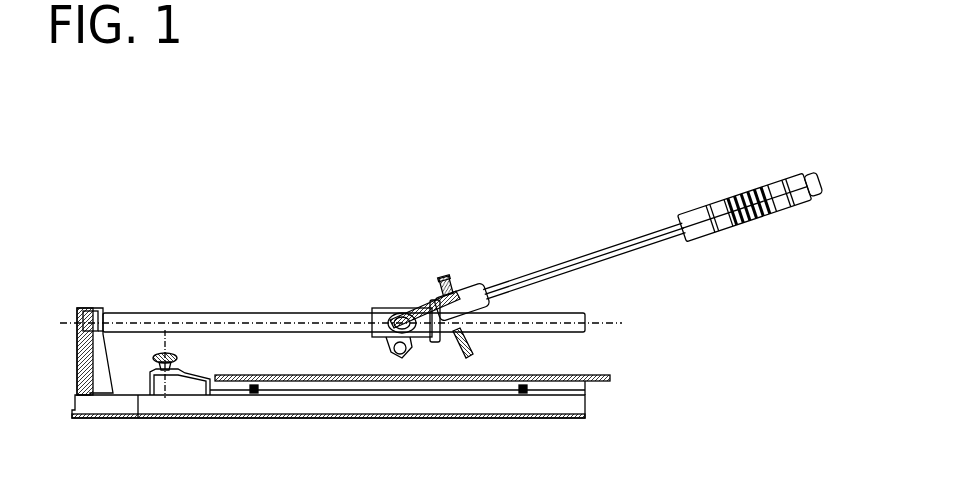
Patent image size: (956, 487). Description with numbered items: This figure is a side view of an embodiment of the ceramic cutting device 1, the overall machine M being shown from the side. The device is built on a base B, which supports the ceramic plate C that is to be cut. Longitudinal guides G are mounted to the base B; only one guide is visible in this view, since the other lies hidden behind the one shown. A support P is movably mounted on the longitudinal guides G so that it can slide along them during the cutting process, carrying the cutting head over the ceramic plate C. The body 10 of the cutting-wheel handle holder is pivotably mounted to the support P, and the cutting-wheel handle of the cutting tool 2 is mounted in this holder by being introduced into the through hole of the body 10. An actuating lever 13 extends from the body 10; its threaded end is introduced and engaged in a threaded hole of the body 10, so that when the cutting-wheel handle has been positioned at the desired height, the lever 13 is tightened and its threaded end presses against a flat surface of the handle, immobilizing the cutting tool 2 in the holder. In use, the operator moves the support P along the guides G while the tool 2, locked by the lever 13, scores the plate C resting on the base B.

The machine M is at (283, 190).
The base B is at (587, 412).
The ceramic plate C is at (610, 377).
The longitudinal guides G is at (230, 313).
The support P is at (387, 307).
The body of the cutting-wheel handle holder 10 is at (432, 300).
The cutting tool 2 is at (446, 280).
The ceramic cutting device 1 is at (483, 259).
The actuating lever 13 is at (617, 248).